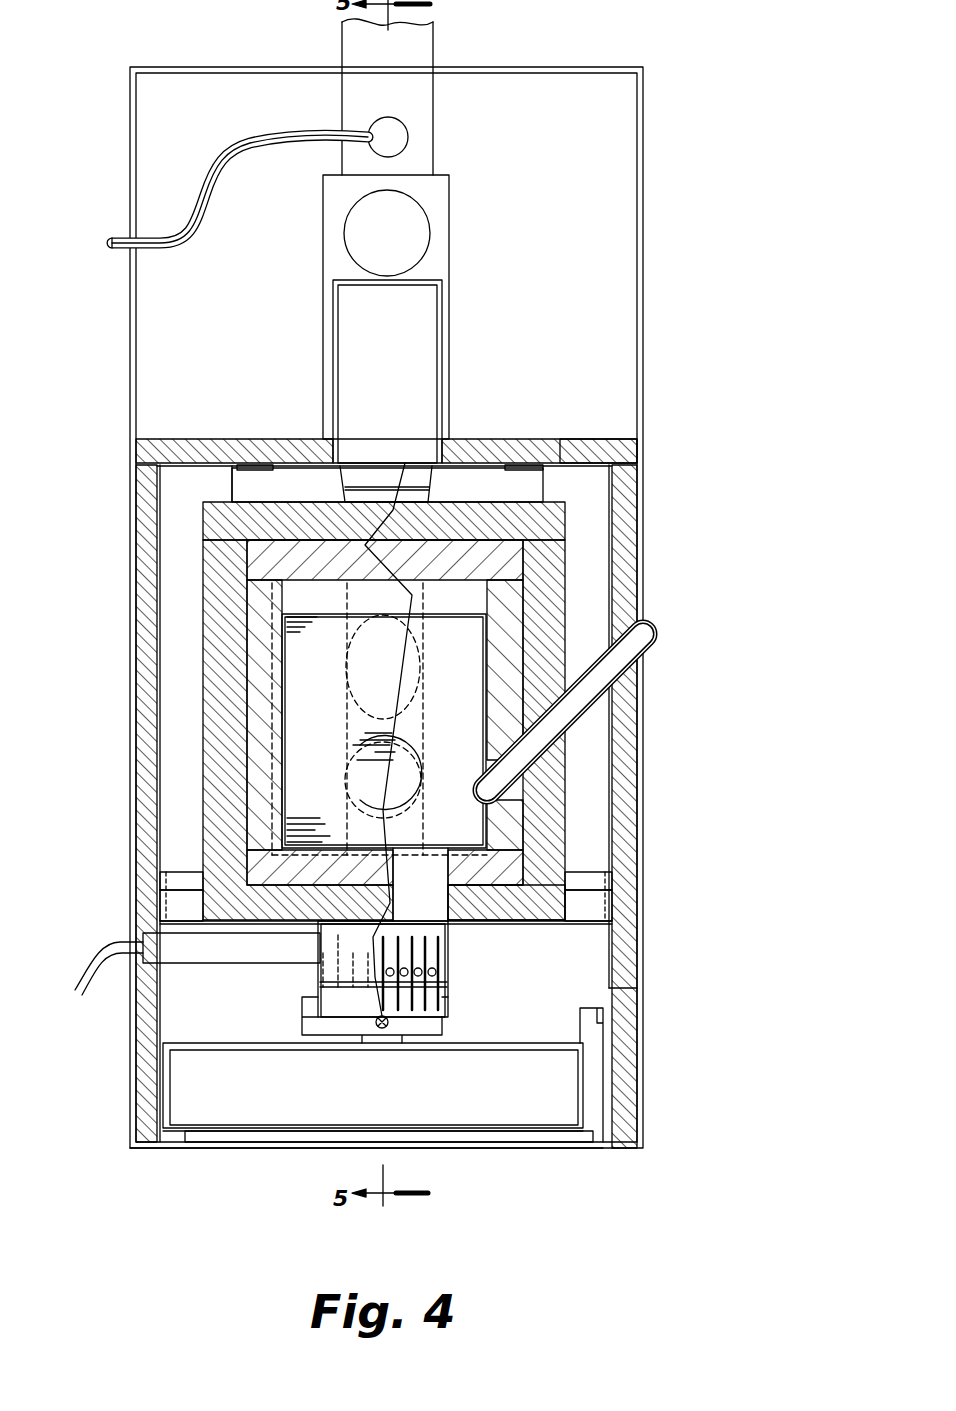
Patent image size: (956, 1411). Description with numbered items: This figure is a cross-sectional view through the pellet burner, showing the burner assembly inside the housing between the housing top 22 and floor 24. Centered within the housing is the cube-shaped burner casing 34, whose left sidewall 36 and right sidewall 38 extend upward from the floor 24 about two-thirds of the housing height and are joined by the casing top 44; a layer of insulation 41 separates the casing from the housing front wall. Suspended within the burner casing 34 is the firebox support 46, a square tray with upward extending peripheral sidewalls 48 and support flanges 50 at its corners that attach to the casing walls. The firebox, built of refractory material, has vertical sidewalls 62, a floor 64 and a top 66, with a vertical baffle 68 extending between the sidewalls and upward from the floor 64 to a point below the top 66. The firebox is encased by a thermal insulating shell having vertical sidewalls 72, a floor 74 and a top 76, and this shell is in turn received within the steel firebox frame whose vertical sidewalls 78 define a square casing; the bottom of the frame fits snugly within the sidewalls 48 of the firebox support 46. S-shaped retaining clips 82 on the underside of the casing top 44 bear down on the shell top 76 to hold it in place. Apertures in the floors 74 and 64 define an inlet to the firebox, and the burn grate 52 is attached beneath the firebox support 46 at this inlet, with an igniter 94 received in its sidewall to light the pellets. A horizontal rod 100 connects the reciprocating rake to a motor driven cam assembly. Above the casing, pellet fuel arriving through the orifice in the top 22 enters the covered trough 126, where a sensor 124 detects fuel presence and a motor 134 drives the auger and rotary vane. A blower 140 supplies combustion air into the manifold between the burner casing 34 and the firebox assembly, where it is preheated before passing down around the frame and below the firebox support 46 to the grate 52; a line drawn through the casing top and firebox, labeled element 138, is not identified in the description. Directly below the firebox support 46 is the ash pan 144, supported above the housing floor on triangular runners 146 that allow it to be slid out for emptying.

The top 22 is at (534, 68).
The floor 24 is at (462, 1148).
The burner casing 34 is at (223, 408).
The left sidewall 36 is at (153, 722).
The right sidewall 38 is at (623, 521).
The layer of insulation 41 is at (614, 441).
The top 44 is at (560, 463).
The firebox support 46 is at (550, 873).
The peripheral sidewalls 48 is at (198, 906).
The support flanges 50 is at (183, 883).
The burn grate 52 is at (290, 985).
The vertical sidewalls 62 is at (255, 745).
The floor 64 is at (492, 878).
The top 66 is at (226, 566).
The vertical baffle 68 is at (320, 613).
The vertical sidewalls 72 is at (262, 668).
The floor 74 is at (473, 923).
The top 76 is at (223, 525).
The vertical sidewalls 78 is at (565, 810).
The retaining clips 82 is at (237, 485).
The igniter 94 is at (227, 952).
The horizontal rod 100 is at (385, 1028).
The sensor 124 is at (400, 142).
The trough 126 is at (420, 43).
The motor 134 is at (393, 237).
The thermocouple 138 is at (405, 463).
The blower 140 is at (440, 323).
The ash pan 144 is at (200, 1131).
The triangular runners 146 is at (218, 1135).